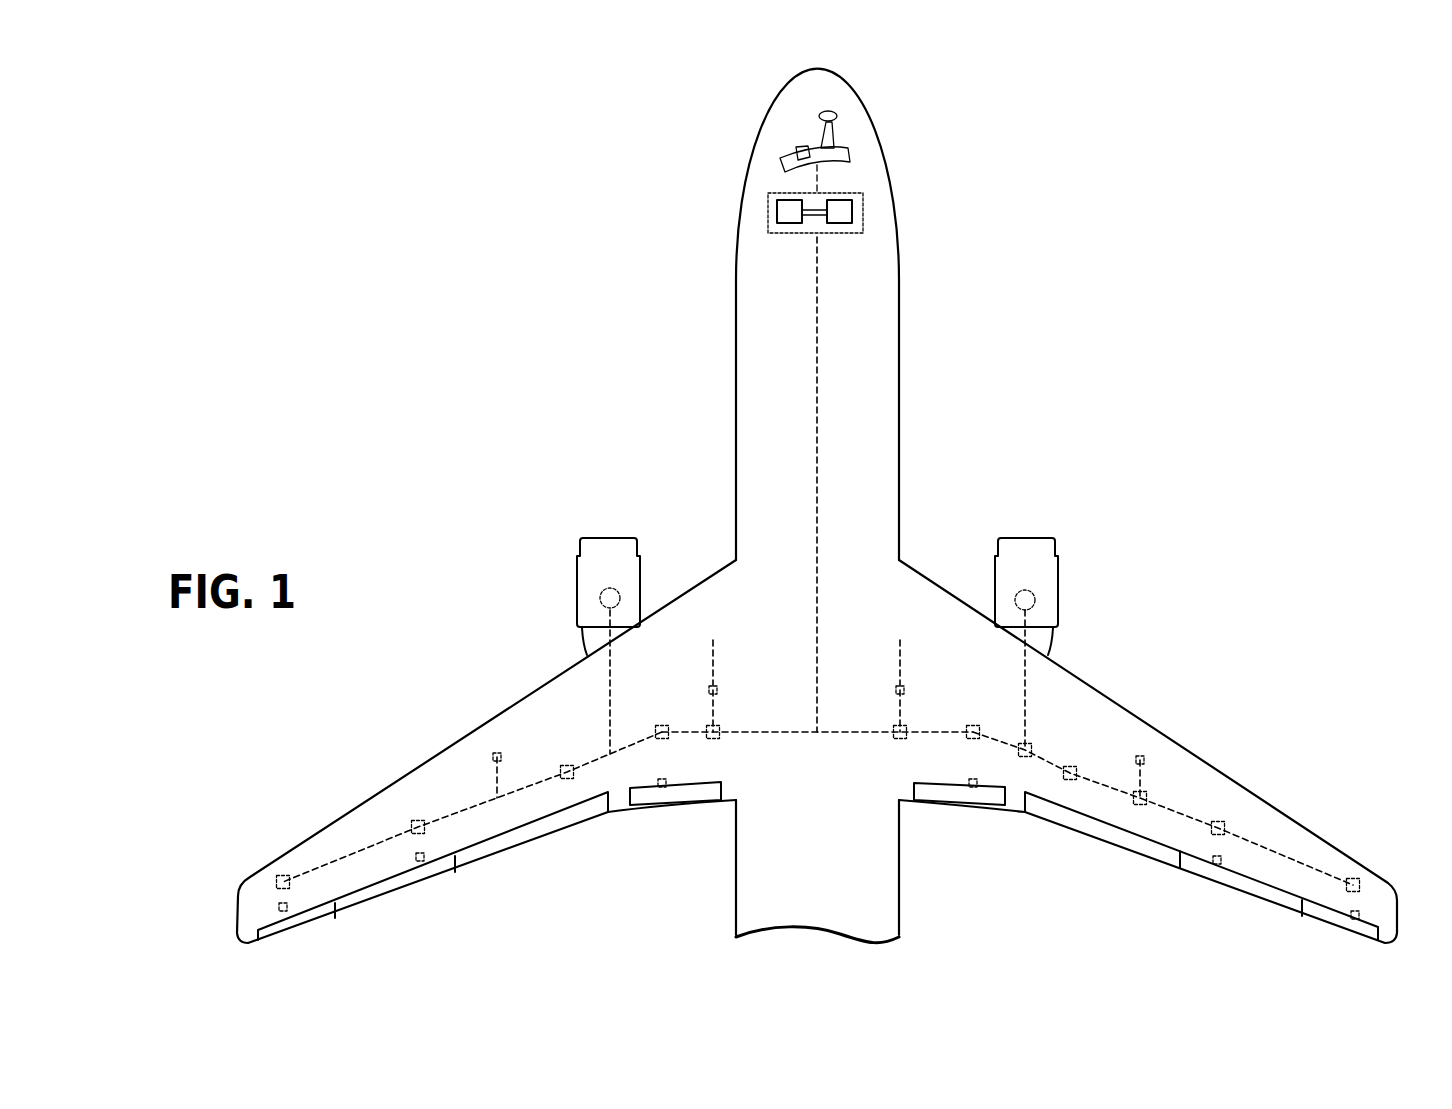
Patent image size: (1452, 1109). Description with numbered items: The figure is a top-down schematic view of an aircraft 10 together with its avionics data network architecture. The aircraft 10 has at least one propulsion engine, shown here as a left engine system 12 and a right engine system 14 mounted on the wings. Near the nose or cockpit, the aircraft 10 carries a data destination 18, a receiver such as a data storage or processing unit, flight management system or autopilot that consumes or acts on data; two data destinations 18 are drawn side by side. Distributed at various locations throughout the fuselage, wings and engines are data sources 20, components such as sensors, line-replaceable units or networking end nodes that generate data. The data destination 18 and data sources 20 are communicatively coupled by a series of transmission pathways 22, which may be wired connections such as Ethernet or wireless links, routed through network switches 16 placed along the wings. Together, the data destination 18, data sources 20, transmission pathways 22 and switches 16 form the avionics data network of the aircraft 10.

The aircraft 10 is at (627, 103).
The left engine system 12 is at (608, 547).
The right engine system 14 is at (1042, 552).
The network switch 16 is at (660, 740).
The data destination 18 is at (777, 227).
The data source 20 is at (622, 594).
The transmission pathway 22 is at (817, 420).